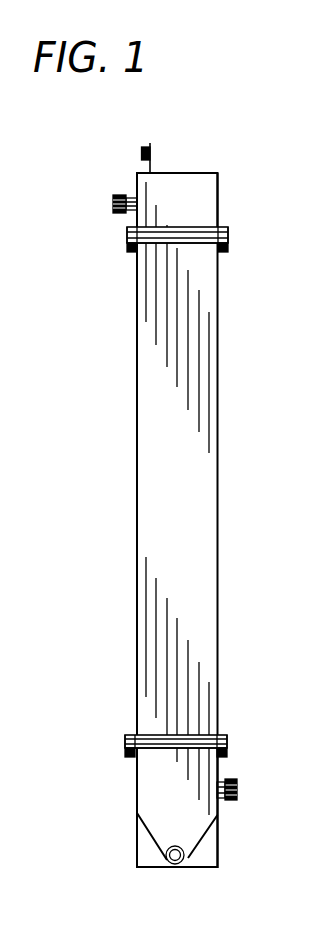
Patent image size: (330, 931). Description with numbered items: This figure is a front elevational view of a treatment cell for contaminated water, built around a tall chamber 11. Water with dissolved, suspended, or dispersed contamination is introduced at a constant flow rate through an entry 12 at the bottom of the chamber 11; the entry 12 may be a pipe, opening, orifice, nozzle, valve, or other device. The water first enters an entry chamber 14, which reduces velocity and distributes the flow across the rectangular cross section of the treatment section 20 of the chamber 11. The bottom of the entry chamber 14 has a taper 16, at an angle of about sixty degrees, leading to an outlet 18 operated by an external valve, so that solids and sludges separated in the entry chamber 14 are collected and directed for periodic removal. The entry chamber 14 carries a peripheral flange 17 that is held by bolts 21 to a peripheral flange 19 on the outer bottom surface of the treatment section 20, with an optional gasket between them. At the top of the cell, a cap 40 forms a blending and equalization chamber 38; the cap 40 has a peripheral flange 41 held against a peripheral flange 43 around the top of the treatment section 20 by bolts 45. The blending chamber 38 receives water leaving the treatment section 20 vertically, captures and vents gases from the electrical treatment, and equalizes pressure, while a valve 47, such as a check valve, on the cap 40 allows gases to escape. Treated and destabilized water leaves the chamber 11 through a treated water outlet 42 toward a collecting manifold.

The chamber 11 is at (233, 478).
The entry 12 is at (238, 789).
The entry chamber 14 is at (190, 807).
The taper 16 is at (137, 833).
The peripheral flange 17 is at (155, 749).
The outlet 18 is at (168, 861).
The peripheral flange 19 is at (150, 733).
The treatment section 20 is at (204, 568).
The bolts 21 is at (125, 752).
The blending and equalization chamber 38 is at (182, 172).
The cap 40 is at (218, 192).
The peripheral flange 41 is at (190, 232).
The treated water outlet 42 is at (115, 205).
The peripheral flange 43 is at (193, 243).
The bolts 45 is at (229, 249).
The valve 47 is at (143, 153).